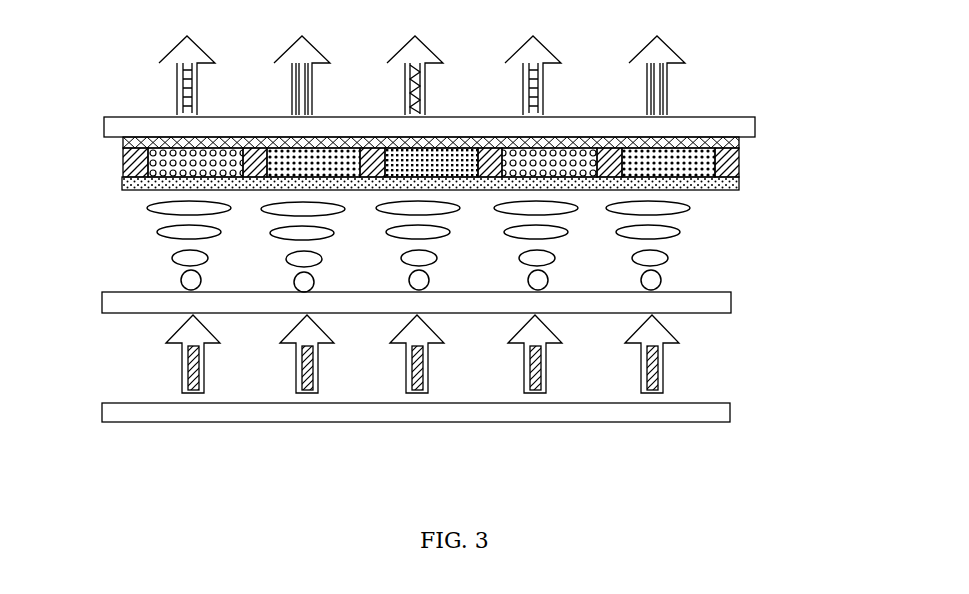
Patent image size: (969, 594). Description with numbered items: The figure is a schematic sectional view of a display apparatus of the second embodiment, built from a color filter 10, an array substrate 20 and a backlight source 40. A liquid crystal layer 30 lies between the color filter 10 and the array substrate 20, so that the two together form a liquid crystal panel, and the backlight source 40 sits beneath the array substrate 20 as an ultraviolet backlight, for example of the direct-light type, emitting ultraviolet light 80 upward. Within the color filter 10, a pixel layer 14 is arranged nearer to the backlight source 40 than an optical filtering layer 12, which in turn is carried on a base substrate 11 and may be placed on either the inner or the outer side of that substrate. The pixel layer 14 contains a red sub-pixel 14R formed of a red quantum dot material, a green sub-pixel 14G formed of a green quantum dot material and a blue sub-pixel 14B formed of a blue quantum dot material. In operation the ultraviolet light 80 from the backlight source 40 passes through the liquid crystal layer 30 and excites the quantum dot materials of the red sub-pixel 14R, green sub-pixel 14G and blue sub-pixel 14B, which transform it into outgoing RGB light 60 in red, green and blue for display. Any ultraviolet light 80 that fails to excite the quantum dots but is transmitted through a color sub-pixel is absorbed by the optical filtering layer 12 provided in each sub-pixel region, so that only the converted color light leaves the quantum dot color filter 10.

The color filter 10 is at (760, 160).
The base substrate 11 is at (733, 127).
The optical filtering layer 12 is at (739, 144).
The pixel layer 14 is at (393, 124).
The red sub-pixel 14R is at (192, 157).
The green sub-pixel 14G is at (307, 157).
The blue sub-pixel 14B is at (422, 172).
The array substrate 20 is at (737, 305).
The liquid crystal layer 30 is at (737, 235).
The backlight source 40 is at (733, 412).
The RGB light 60 is at (708, 74).
The ultraviolet light 80 is at (683, 357).